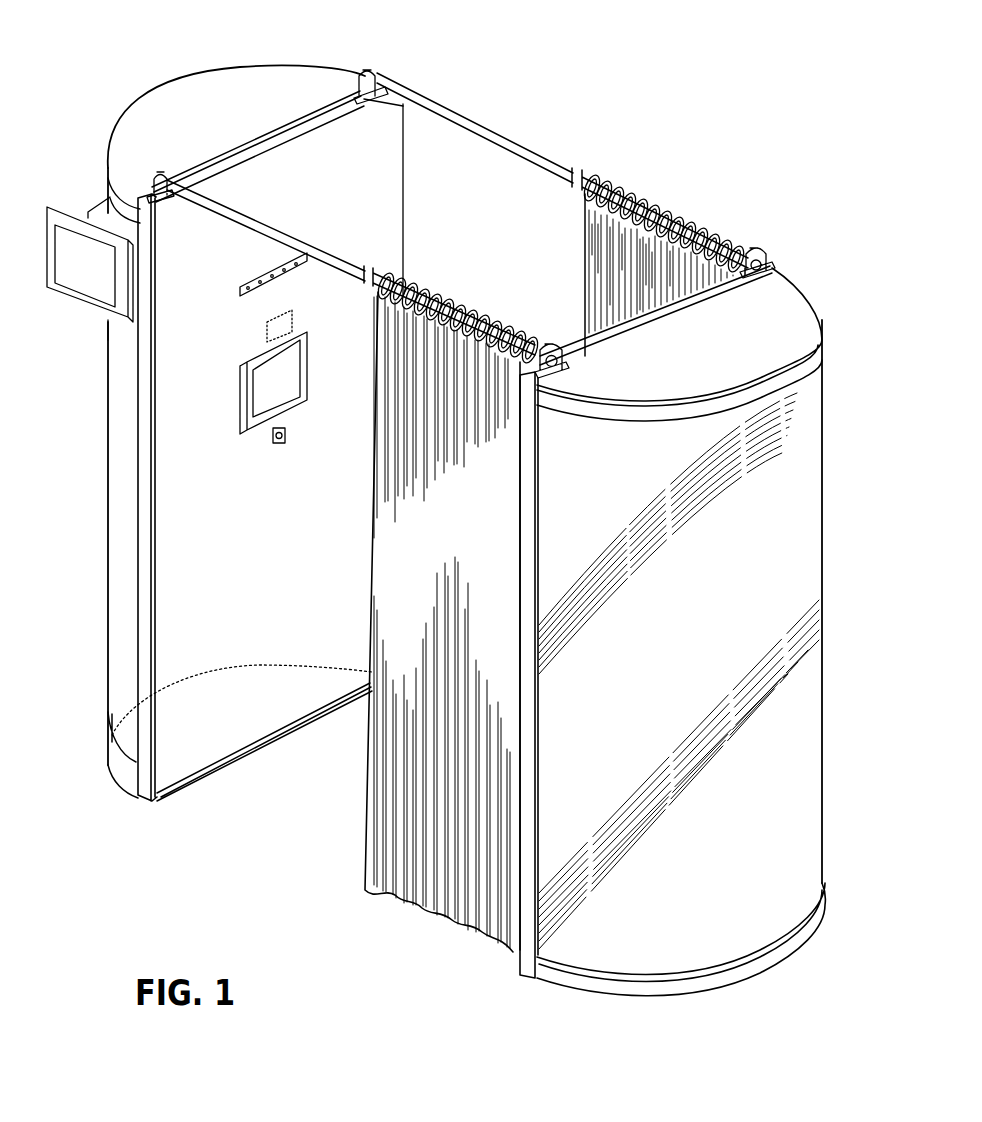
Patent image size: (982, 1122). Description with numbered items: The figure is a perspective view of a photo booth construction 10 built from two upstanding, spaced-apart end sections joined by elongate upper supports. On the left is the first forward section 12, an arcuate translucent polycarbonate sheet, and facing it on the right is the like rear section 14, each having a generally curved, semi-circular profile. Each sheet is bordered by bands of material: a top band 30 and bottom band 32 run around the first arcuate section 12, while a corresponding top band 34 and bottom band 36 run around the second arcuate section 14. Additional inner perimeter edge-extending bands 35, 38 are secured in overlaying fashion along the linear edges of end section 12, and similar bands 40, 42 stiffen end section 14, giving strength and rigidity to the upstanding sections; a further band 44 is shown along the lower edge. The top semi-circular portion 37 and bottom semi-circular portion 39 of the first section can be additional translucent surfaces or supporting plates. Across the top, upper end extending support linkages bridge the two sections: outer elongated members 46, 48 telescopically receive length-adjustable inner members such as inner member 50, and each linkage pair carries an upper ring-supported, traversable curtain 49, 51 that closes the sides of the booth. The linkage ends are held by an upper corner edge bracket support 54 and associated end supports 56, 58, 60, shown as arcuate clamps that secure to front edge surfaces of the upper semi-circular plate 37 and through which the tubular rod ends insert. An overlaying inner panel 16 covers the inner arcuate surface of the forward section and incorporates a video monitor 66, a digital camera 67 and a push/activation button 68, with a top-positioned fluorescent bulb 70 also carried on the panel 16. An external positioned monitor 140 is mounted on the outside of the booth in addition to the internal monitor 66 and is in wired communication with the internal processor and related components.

The photo booth construction 10 is at (566, 100).
The first forward section 12 is at (122, 505).
The rear section 14 is at (763, 591).
The overlaying panel 16 is at (262, 531).
The top band 30 is at (112, 178).
The bottom band 32 is at (116, 760).
The top band 34 is at (637, 410).
The inner perimeter edge extending band 35 is at (148, 352).
The bottom band 36 is at (590, 990).
The top semi-circular portion 37 is at (245, 114).
The inner perimeter edge extending band 38 is at (293, 127).
The bottom semi-circular portion 39 is at (226, 706).
The inner perimeter edge extending band 40 is at (522, 708).
The inner perimeter edge extending band 42 is at (660, 312).
The bottom rail of first panel 44 is at (185, 790).
The outer elongated member 46 is at (581, 175).
The outer elongated member 48 is at (368, 272).
The curtain 49 is at (598, 250).
The inner member 50 is at (471, 122).
The curtain 51 is at (397, 610).
The upper corner edge bracket support 54 is at (366, 82).
The end support 56 is at (762, 262).
The end support 58 is at (148, 178).
The end support 60 is at (533, 343).
The video monitor 66 is at (279, 372).
The camera 67 is at (277, 330).
The push/activation button 68 is at (290, 436).
The fluorescent bulb 70 is at (240, 292).
The external positioned monitor 140 is at (78, 267).